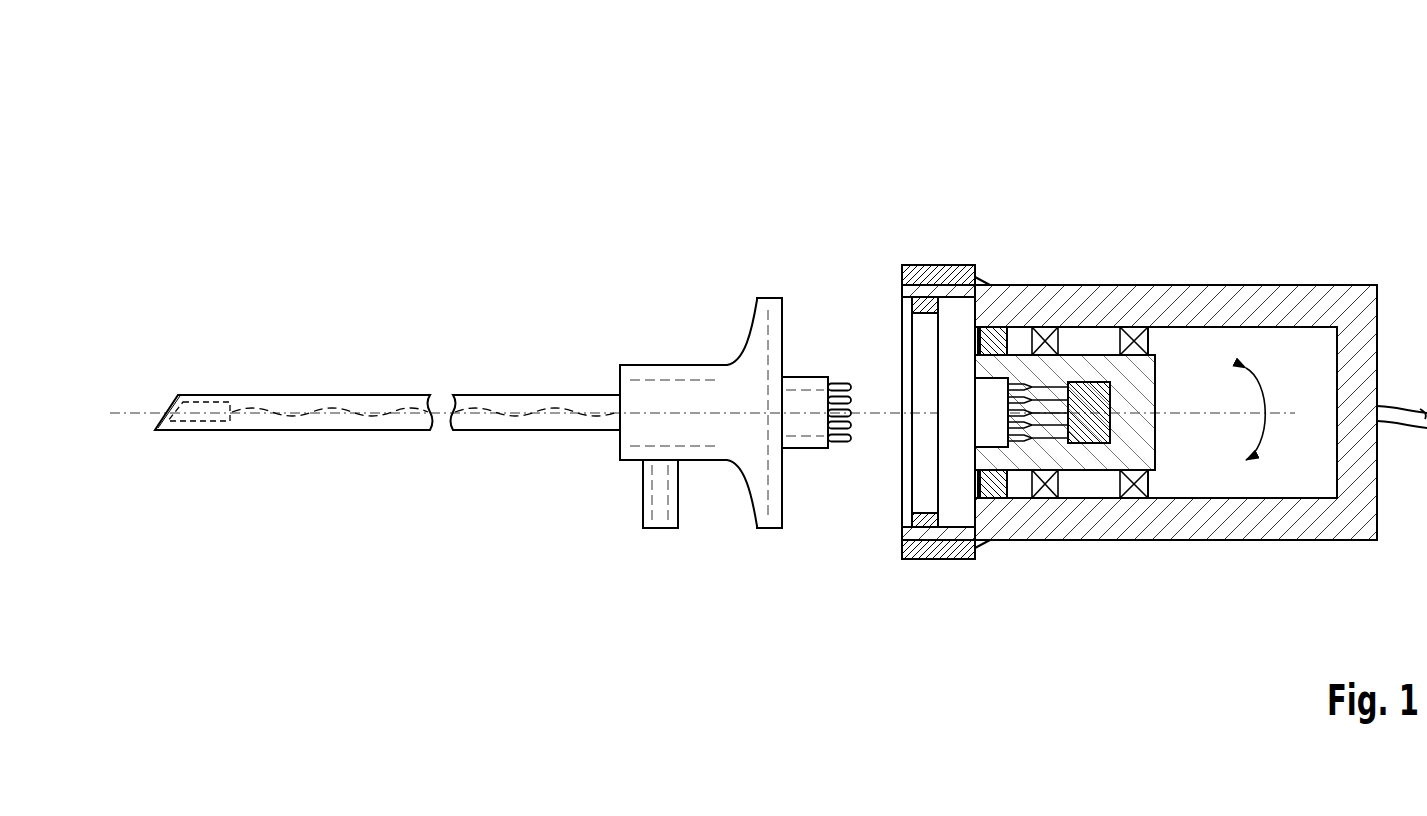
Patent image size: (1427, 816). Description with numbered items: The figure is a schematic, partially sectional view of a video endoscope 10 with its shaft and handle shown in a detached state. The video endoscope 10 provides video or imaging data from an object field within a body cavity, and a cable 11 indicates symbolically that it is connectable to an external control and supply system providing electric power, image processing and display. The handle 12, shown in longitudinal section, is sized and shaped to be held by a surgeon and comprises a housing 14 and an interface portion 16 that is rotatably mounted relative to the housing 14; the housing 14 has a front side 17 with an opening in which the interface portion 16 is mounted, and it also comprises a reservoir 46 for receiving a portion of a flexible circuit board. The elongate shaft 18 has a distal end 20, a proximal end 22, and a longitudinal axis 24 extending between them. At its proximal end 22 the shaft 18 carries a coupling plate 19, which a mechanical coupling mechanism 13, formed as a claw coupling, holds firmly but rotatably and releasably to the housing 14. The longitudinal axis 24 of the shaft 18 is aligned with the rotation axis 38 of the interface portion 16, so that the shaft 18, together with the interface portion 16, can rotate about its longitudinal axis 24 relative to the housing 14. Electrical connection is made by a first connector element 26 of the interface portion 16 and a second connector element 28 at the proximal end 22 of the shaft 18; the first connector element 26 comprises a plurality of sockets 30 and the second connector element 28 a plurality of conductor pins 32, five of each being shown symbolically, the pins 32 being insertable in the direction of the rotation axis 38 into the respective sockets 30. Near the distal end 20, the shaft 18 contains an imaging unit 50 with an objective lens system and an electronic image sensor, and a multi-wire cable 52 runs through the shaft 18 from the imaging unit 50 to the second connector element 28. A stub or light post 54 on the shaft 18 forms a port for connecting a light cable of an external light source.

The video endoscope 10 is at (874, 240).
The cable 11 is at (1405, 410).
The handle 12 is at (1176, 351).
The mechanical coupling mechanism 13 is at (925, 582).
The housing 14 is at (1222, 305).
The interface portion 16 is at (1085, 368).
The front side 17 is at (875, 525).
The shaft 18 is at (373, 352).
The coupling plate 19 is at (767, 298).
The distal end 20 is at (192, 436).
The proximal end 22 is at (818, 365).
The longitudinal axis 24 is at (137, 410).
The first connector element 26 is at (1003, 393).
The second connector element 28 is at (853, 430).
The sockets 30 is at (1013, 383).
The conductor pins 32 is at (838, 384).
The rotation axis 38 is at (1208, 412).
The reservoir 46 is at (1087, 500).
The imaging unit 50 is at (205, 410).
The multi-wire cable 52 is at (328, 433).
The light post 54 is at (652, 513).